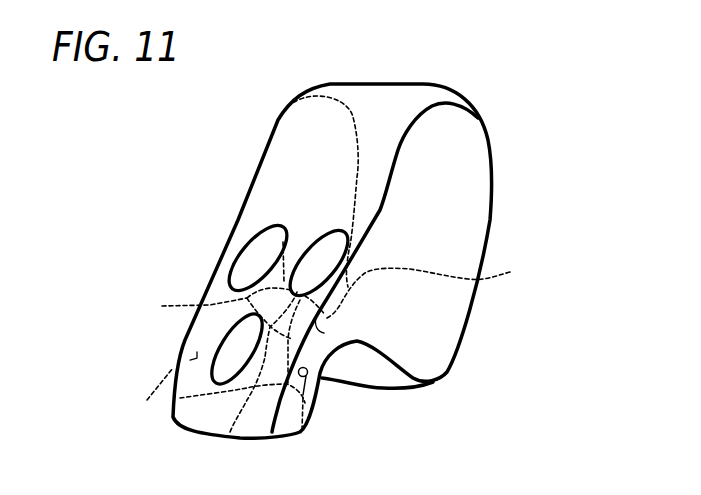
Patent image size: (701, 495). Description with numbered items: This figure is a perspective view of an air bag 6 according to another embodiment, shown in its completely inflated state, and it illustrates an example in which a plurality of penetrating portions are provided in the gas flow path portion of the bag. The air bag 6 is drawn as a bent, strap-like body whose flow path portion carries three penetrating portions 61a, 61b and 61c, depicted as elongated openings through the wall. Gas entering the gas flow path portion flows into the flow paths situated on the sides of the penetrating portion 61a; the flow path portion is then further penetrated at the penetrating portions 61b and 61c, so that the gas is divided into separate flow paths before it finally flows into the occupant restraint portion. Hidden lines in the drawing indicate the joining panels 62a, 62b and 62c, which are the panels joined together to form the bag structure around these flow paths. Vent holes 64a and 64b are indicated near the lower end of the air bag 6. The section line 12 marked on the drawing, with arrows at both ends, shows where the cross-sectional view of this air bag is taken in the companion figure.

The air bag 6 is at (505, 133).
The line 12— 12 is at (205, 263).
The penetrating portion 61a is at (237, 348).
The penetrating portion 61b is at (253, 250).
The penetrating portion 61c is at (323, 253).
The joining panel 62a is at (230, 432).
The joining panel 62b is at (207, 315).
The joining panel 62c is at (438, 289).
The vent hole 64a is at (136, 394).
The vent hole 64b is at (302, 432).